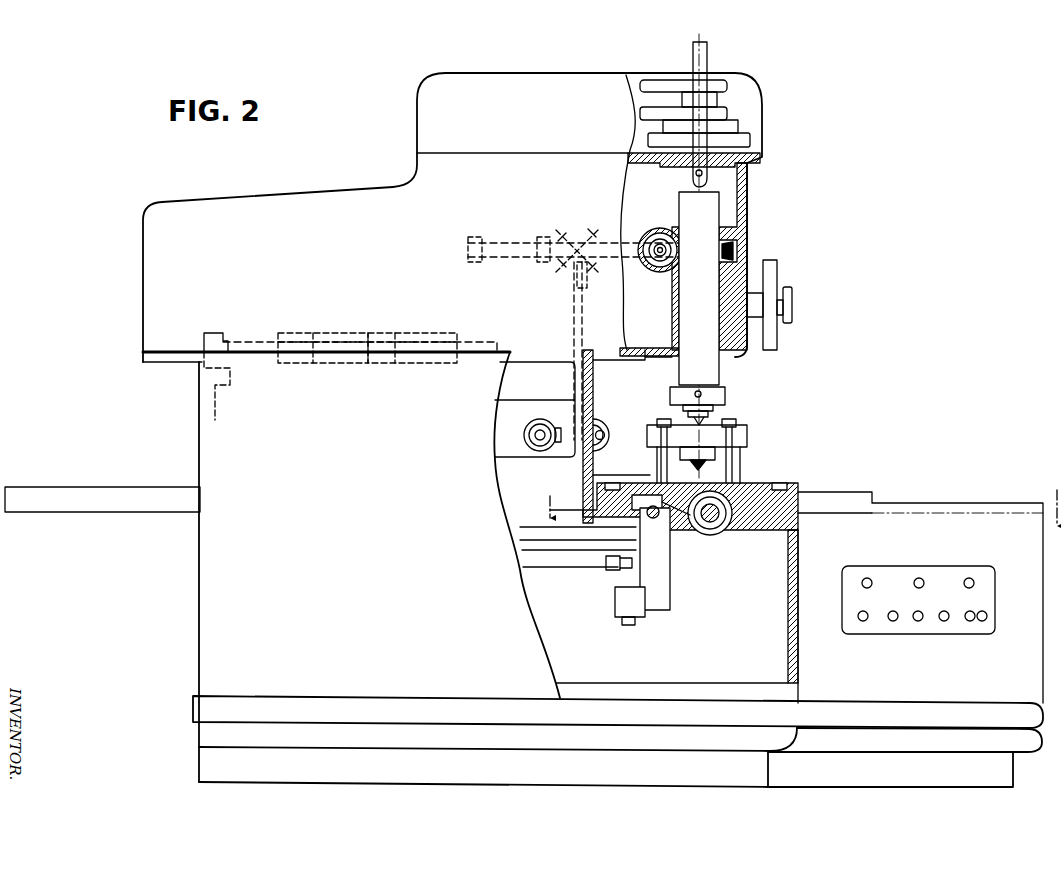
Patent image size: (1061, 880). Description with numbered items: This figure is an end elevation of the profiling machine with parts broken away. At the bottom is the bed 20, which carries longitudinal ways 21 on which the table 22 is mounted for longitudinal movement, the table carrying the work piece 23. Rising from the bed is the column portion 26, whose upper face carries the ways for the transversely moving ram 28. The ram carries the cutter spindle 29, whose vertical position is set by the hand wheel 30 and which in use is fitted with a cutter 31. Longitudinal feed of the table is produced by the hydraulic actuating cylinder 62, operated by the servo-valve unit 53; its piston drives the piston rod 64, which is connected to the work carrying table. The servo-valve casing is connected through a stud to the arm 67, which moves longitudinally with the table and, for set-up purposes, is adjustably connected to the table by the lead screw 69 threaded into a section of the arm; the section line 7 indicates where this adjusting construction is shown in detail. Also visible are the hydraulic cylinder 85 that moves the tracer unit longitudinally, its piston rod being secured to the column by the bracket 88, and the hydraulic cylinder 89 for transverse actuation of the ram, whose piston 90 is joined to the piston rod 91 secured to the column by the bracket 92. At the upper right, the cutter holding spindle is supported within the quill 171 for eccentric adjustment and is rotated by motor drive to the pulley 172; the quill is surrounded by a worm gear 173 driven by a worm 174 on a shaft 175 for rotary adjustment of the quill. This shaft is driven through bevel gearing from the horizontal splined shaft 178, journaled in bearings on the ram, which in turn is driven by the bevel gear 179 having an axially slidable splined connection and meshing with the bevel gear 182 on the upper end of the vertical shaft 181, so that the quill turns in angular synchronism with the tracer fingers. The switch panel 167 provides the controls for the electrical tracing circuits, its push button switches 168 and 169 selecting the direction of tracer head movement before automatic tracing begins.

The section line 7- 7 is at (801, 500).
The bed 20 is at (211, 603).
The longitudinal ways 21 is at (737, 522).
The table 22 is at (757, 483).
The work piece 23 is at (748, 438).
The column portion 26 is at (210, 429).
The ram 28 is at (172, 229).
The cutter spindle 29 is at (717, 405).
The hand wheel 30 is at (776, 343).
The cutter 31 is at (684, 412).
The servo-valve unit 53 is at (612, 566).
The hydraulic actuating cylinder 62 is at (663, 525).
The piston rod 64 is at (710, 528).
The arm 67 is at (617, 598).
The lead screw 69 is at (656, 522).
The hydraulic cylinder 85 is at (526, 432).
The bracket 88 is at (547, 448).
The hydraulic cylinder 89 is at (313, 365).
The piston 90 is at (369, 365).
The piston rod 91 is at (264, 344).
The bracket 92 is at (214, 339).
The switch panel 167 is at (897, 575).
The push button switch 168 is at (892, 622).
The push button switch 169 is at (946, 622).
The quill 171 is at (678, 366).
The pulley 172 is at (730, 128).
The worm gear 173 is at (733, 249).
The worm 174 is at (657, 240).
The shaft 175 is at (656, 262).
The horizontal splined shaft 178 is at (510, 253).
The bevel gear 179 is at (562, 239).
The vertical shaft 181 is at (574, 324).
The bevel gear 182 is at (575, 278).